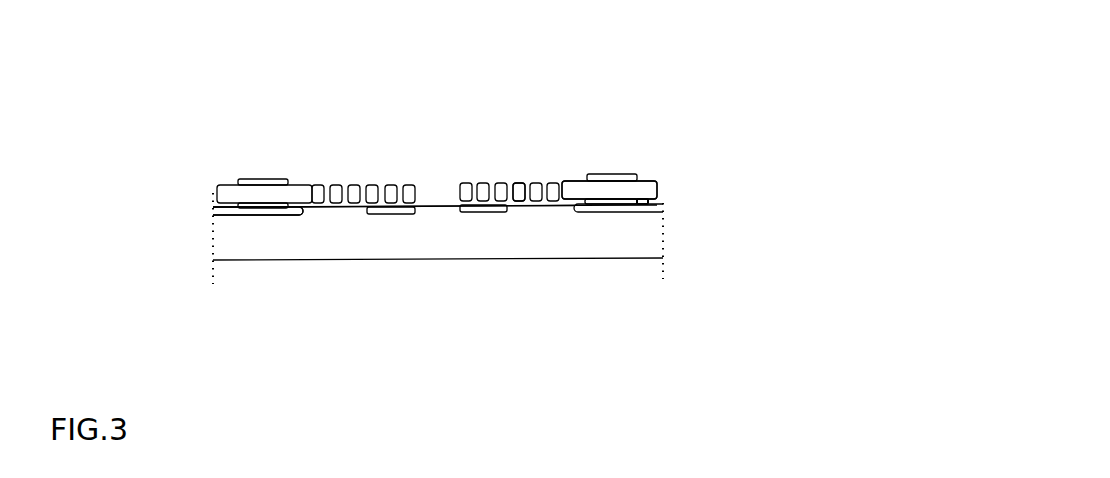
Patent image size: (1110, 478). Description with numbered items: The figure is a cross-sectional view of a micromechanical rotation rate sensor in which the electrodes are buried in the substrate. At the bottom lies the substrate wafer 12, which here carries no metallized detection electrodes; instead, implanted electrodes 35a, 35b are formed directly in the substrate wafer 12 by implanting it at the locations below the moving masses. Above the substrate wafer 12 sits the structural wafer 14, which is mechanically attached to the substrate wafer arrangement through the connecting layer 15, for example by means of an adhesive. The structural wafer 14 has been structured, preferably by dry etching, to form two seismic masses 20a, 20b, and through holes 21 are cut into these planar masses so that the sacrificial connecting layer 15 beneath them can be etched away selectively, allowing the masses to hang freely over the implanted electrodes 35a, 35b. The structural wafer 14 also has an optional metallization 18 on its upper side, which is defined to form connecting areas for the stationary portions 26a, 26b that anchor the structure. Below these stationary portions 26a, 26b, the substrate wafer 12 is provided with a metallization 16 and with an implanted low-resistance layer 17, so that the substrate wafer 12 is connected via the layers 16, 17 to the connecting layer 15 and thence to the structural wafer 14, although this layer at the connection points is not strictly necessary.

The substrate wafer 12 is at (647, 233).
The structural wafer 14 is at (660, 187).
The connecting layer 15 is at (670, 198).
The metallization 16 is at (663, 210).
The implanted low-resistance layer 17 is at (253, 217).
The metallization 18 is at (625, 175).
The seismic mass 20a is at (363, 185).
The seismic mass 20b is at (470, 185).
The through holes 21 is at (523, 185).
The stationary portion 26a is at (263, 180).
The stationary portion 26b is at (595, 175).
The implanted electrode 35a is at (490, 212).
The implanted electrode 35b is at (387, 214).